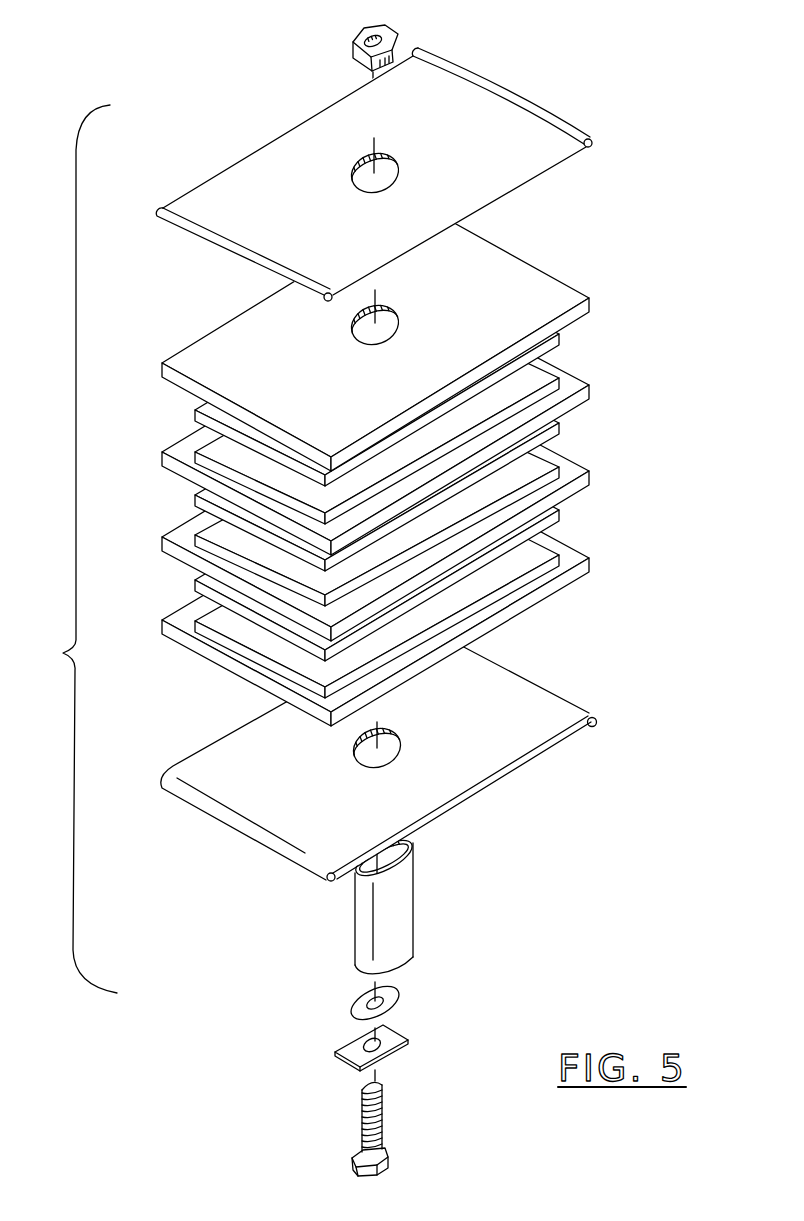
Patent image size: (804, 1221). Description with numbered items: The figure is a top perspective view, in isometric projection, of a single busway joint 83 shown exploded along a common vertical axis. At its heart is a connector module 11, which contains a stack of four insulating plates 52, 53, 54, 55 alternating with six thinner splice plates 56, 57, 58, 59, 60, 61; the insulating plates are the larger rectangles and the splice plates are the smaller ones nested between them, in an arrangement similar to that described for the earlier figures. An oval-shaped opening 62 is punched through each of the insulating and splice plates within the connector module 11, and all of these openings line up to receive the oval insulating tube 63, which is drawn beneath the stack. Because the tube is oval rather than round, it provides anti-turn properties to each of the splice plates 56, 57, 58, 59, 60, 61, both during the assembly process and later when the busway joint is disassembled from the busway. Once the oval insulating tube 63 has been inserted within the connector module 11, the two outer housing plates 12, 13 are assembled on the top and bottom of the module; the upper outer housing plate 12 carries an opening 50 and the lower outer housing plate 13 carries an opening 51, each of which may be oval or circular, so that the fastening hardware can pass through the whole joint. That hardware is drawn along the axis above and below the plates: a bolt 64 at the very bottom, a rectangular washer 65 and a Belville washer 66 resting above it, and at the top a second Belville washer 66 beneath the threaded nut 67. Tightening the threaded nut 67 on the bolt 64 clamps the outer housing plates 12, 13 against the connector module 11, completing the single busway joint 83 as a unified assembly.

The connector module 11 is at (662, 609).
The outer housing plate 12 is at (597, 140).
The outer housing plate 13 is at (581, 708).
The opening 50 is at (388, 169).
The opening 51 is at (385, 749).
The insulating plate 52 is at (195, 345).
The insulating plate 53 is at (162, 460).
The insulating plate 54 is at (162, 547).
The insulating plate 55 is at (162, 627).
The splice plate 56 is at (194, 412).
The splice plate 57 is at (200, 441).
The splice plate 58 is at (196, 499).
The splice plate 59 is at (197, 533).
The splice plate 60 is at (196, 583).
The splice plate 61 is at (199, 618).
The oval-shaped opening 62 is at (397, 328).
The oval insulating tube 63 is at (414, 911).
The bolt 64 is at (384, 1125).
The rectangular washer 65 is at (398, 1038).
The Belville washer 66 is at (402, 993).
The threaded nut 67 is at (398, 28).
The single busway joint 83 is at (53, 666).